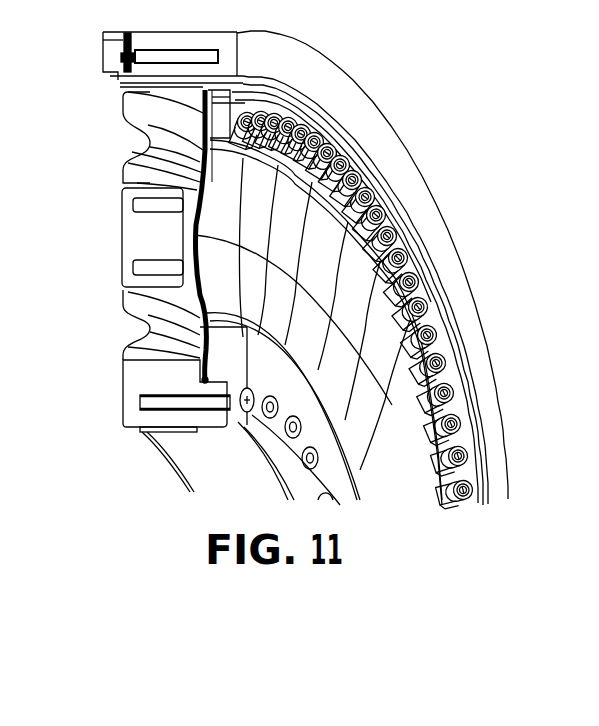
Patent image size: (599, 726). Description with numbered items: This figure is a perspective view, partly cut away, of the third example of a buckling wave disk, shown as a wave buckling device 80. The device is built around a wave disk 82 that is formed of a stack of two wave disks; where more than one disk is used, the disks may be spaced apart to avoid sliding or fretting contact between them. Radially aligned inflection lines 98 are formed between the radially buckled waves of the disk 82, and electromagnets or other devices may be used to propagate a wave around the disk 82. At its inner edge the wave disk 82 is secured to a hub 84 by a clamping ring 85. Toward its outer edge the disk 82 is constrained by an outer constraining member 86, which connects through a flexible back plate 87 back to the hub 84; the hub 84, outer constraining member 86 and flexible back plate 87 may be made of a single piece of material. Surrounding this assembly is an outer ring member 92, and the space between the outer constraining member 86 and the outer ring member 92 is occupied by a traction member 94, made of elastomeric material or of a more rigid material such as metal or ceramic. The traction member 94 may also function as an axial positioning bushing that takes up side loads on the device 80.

The wave buckling device 80 is at (430, 71).
The wave disk 82 is at (325, 252).
The hub 84 is at (153, 428).
The clamping ring 85 is at (330, 468).
The outer constraining member 86 is at (228, 90).
The flexible back plate 87 is at (128, 117).
The outer ring member 92 is at (292, 46).
The traction member 94 is at (165, 68).
The radially aligned inflection lines 98 is at (283, 200).